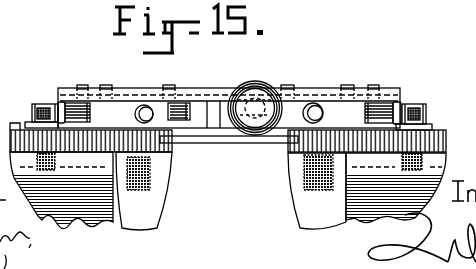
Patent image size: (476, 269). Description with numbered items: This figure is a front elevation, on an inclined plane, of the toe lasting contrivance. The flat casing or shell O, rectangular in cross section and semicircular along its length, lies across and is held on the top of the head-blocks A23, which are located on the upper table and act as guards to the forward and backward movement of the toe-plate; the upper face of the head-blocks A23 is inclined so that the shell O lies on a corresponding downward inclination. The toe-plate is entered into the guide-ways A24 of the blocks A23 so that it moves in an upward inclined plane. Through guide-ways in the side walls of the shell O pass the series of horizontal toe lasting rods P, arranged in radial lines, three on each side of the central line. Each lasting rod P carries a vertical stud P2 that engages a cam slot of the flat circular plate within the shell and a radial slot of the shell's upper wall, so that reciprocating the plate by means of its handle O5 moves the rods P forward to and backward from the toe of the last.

The casing or shell O is at (136, 88).
The handle O5 is at (265, 88).
The toe lasting rod P is at (72, 106).
The vertical stud P2 is at (83, 85).
The head-block A23 is at (285, 187).
The guide-way A24 is at (284, 147).